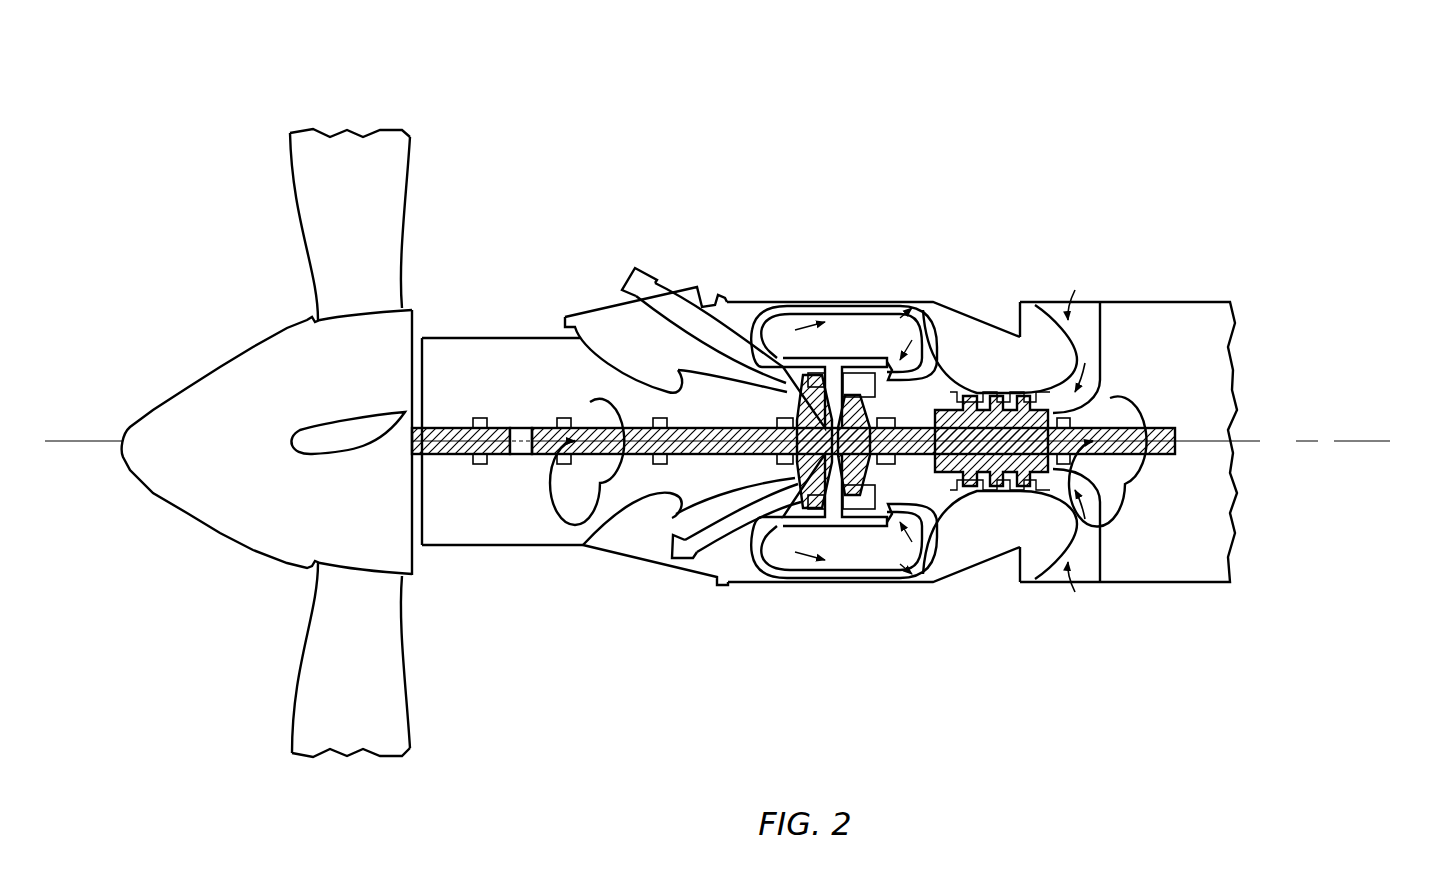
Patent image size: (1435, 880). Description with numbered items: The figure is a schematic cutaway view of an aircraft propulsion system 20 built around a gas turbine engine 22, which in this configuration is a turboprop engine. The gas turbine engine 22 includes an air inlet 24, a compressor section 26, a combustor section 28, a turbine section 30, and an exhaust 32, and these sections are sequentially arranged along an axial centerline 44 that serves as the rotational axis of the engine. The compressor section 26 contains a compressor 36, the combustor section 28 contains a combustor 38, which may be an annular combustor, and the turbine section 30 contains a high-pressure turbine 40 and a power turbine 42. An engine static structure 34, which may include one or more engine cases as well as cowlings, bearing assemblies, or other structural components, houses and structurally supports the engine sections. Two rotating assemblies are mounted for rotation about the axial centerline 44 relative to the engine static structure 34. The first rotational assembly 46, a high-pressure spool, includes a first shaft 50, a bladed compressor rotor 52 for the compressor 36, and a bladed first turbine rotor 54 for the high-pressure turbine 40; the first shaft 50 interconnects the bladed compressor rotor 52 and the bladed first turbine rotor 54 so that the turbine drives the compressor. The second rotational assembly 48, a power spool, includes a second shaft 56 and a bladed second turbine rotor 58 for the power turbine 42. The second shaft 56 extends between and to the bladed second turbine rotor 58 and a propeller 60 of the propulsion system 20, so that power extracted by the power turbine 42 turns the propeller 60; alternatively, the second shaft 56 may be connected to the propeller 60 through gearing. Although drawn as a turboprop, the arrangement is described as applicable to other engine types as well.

The propulsion system 20 is at (1097, 141).
The gas turbine engine 22 is at (948, 266).
The air inlet 24 is at (1062, 300).
The compressor section 26 is at (990, 502).
The combustor section 28 is at (763, 575).
The turbine section 30 is at (850, 528).
The exhaust 32 is at (627, 558).
The engine static structure 34 is at (855, 302).
The compressor 36 is at (1000, 372).
The combustor 38 is at (847, 550).
The high-pressure turbine 40 is at (865, 360).
The power turbine 42 is at (790, 365).
The axial centerline 44 is at (1270, 442).
The first rotational assembly 46 is at (1092, 398).
The second rotational assembly 48 is at (563, 480).
The first shaft 50 is at (930, 560).
The bladed compressor rotor 52 is at (1005, 457).
The bladed first turbine rotor 54 is at (858, 415).
The second shaft 56 is at (788, 428).
The bladed second turbine rotor 58 is at (777, 568).
The propeller 60 is at (265, 535).